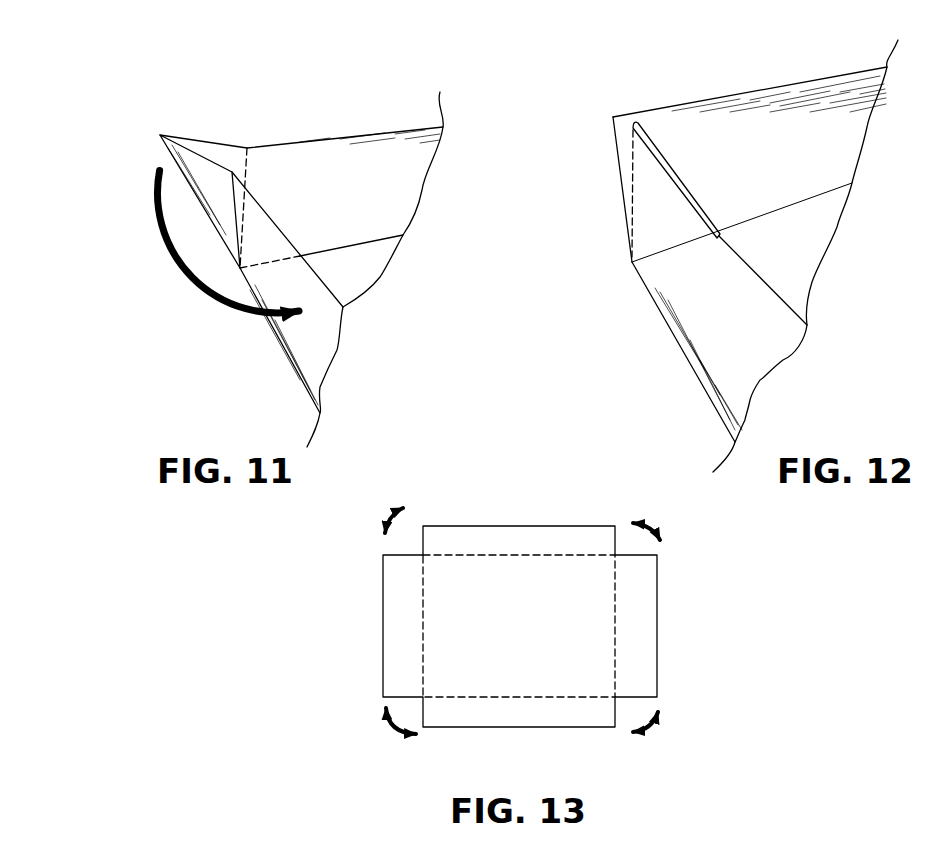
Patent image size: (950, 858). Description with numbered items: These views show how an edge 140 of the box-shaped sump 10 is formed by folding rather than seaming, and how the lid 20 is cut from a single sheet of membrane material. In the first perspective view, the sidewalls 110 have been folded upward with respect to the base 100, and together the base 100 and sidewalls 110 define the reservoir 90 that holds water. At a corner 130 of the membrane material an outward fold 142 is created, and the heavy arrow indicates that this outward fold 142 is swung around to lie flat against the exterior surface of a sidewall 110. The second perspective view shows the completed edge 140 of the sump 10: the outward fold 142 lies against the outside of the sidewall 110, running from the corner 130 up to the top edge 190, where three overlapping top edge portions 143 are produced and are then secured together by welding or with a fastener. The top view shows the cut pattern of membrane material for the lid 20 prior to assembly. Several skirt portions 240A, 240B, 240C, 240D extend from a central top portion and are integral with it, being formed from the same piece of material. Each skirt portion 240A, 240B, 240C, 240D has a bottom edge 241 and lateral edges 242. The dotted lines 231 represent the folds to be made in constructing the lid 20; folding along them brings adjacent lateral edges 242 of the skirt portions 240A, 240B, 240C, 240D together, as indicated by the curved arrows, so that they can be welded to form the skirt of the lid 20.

In FIG. 11, the sump 10 is at (160, 103).
In FIG. 12, the sump 10 is at (622, 93).
In FIG. 13, the lid 20 is at (398, 492).
In FIG. 11, the reservoir 90 is at (347, 163).
In FIG. 12, the reservoir 90 is at (795, 108).
In FIG. 11, the base 100 is at (360, 275).
In FIG. 12, the base 100 is at (833, 227).
In FIG. 11, the sidewall 110 is at (278, 155).
In FIG. 12, the sidewall 110 is at (748, 102).
In FIG. 11, the corner 130 is at (232, 272).
In FIG. 12, the corner 130 is at (628, 265).
In FIG. 12, the edge 140 is at (605, 137).
In FIG. 11, the outward fold 142 is at (148, 138).
In FIG. 12, the outward fold 142 is at (693, 228).
In FIG. 12, the overlapping top edge portions 143 is at (657, 133).
In FIG. 11, the top edge 190 is at (402, 127).
In FIG. 12, the top edge 190 is at (855, 67).
In FIG. 13, the fold line 231 is at (580, 553).
In FIG. 13, the skirt portion 240A is at (648, 592).
In FIG. 13, the skirt portion 240B is at (567, 712).
In FIG. 13, the skirt portion 240C is at (400, 633).
In FIG. 13, the skirt portion 240D is at (528, 538).
In FIG. 13, the bottom edge 241 is at (493, 523).
In FIG. 13, the lateral edge 242 is at (415, 527).